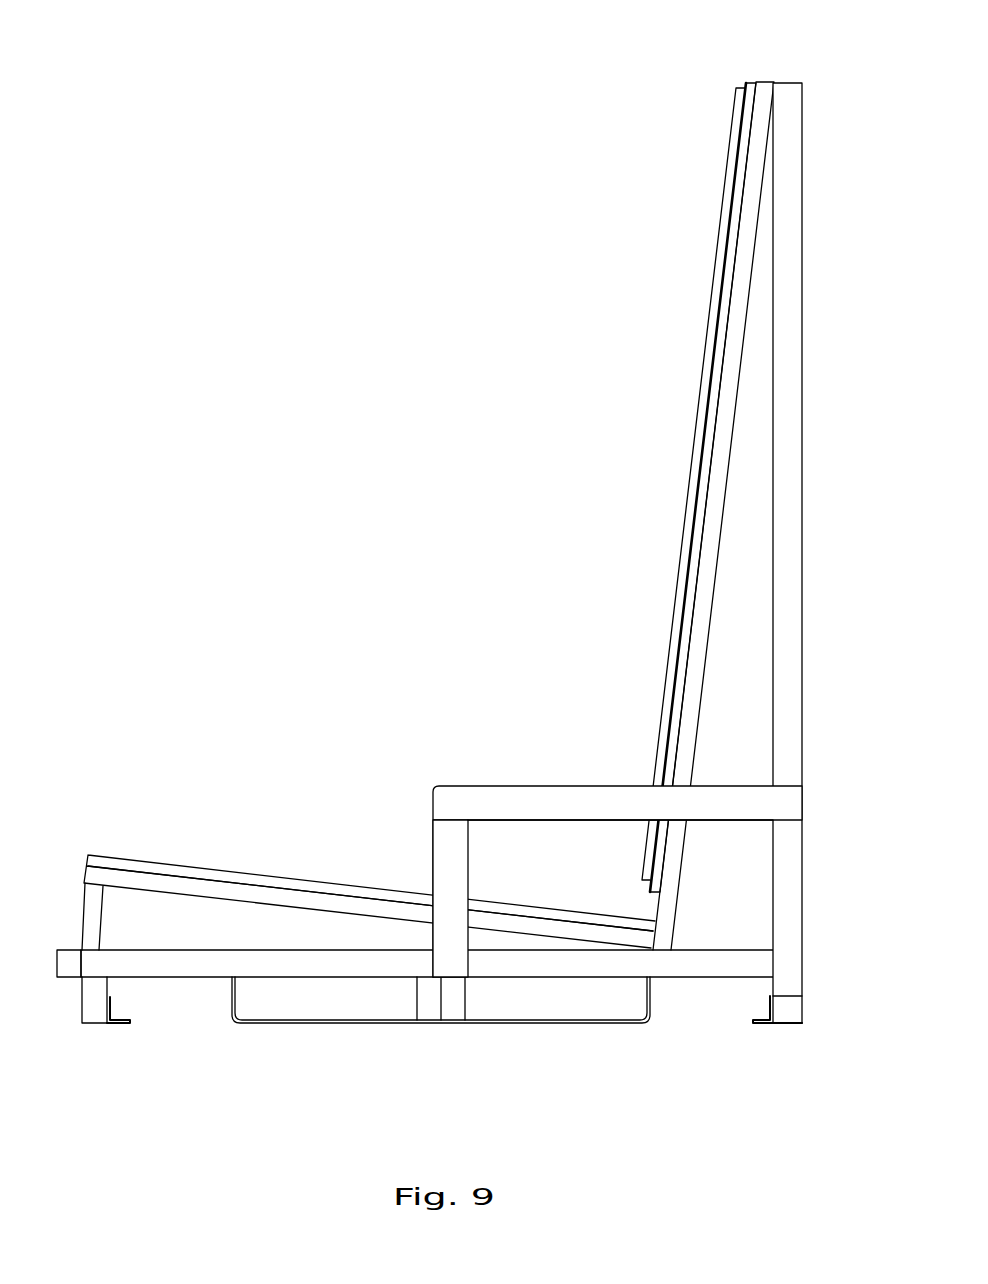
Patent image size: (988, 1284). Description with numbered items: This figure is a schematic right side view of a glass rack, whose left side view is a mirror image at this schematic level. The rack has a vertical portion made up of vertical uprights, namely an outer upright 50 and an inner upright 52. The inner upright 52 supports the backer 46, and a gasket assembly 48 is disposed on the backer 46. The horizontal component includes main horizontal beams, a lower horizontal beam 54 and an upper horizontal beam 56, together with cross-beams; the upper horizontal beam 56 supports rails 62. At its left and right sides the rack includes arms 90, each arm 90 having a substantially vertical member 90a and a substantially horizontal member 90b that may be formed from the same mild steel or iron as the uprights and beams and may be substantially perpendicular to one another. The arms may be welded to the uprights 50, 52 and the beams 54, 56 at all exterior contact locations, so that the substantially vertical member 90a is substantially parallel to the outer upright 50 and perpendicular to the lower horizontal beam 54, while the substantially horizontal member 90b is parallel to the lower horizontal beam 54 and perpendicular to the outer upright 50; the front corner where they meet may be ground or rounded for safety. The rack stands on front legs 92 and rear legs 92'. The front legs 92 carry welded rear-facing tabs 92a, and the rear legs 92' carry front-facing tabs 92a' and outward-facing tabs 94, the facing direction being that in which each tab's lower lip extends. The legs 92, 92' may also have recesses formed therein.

The backer 46 is at (752, 90).
The gasket assembly 48 is at (730, 143).
The outer upright 50 is at (790, 113).
The inner upright 52 is at (758, 140).
The lower horizontal beam 54 is at (287, 963).
The upper horizontal beam 56 is at (160, 886).
The rails 62 is at (283, 880).
The arm 90 is at (555, 783).
The substantially vertical member 90a is at (452, 865).
The substantially horizontal member 90b is at (593, 812).
The front leg 92 is at (79, 1058).
The rear-facing tab 92a is at (154, 1052).
The rear leg 92' is at (833, 1004).
The front-facing tab 92a' is at (740, 1029).
The outward-facing tab 94 is at (780, 1023).